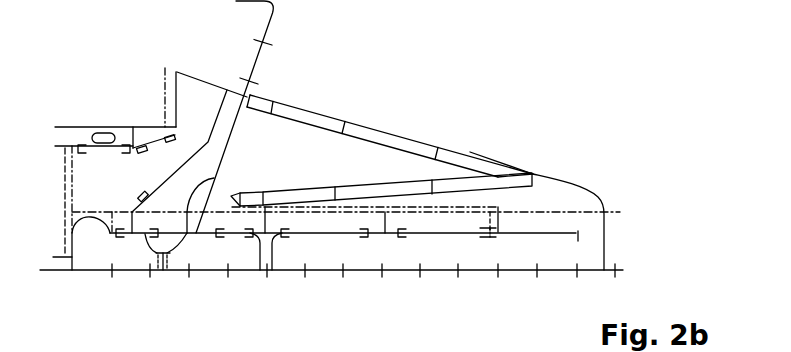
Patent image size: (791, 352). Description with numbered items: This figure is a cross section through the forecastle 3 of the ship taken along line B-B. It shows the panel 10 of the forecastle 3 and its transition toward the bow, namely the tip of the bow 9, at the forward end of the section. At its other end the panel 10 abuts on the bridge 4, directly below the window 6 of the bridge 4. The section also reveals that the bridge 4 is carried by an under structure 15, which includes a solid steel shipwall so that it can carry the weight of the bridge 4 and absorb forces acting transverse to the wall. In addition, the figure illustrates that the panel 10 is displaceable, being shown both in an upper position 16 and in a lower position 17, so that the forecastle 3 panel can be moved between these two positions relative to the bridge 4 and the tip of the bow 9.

The forecastle 3 is at (487, 160).
The bridge 4 is at (252, 86).
The window 6 is at (255, 63).
The tip of the bow 9 is at (597, 194).
The panel 10 is at (417, 135).
The under structure 15 is at (201, 212).
The upper position 16 is at (373, 137).
The lower position 17 is at (358, 193).